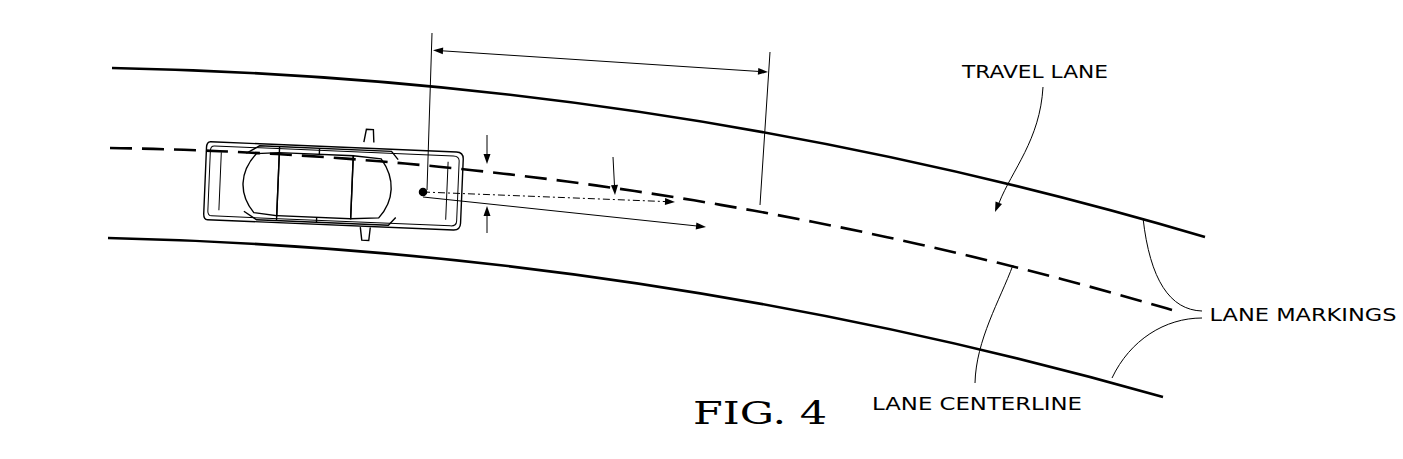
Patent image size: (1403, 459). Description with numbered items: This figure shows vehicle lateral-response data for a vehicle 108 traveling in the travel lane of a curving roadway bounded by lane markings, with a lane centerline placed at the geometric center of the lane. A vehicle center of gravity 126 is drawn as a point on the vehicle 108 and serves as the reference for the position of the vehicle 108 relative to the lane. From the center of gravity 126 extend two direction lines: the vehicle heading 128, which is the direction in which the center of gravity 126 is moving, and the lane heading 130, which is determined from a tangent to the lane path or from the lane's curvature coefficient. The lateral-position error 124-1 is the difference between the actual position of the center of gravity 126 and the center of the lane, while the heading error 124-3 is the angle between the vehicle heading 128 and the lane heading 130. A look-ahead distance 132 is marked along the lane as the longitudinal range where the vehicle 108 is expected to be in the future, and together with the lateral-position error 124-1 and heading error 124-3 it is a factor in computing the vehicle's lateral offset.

The vehicle 108 is at (248, 225).
The lateral-position error 124-1 is at (423, 178).
The heading error 124-3 is at (612, 218).
The vehicle center of gravity 126 is at (422, 197).
The vehicle heading 128 is at (590, 197).
The lane heading 130 is at (528, 207).
The look-ahead distance 132 is at (630, 61).